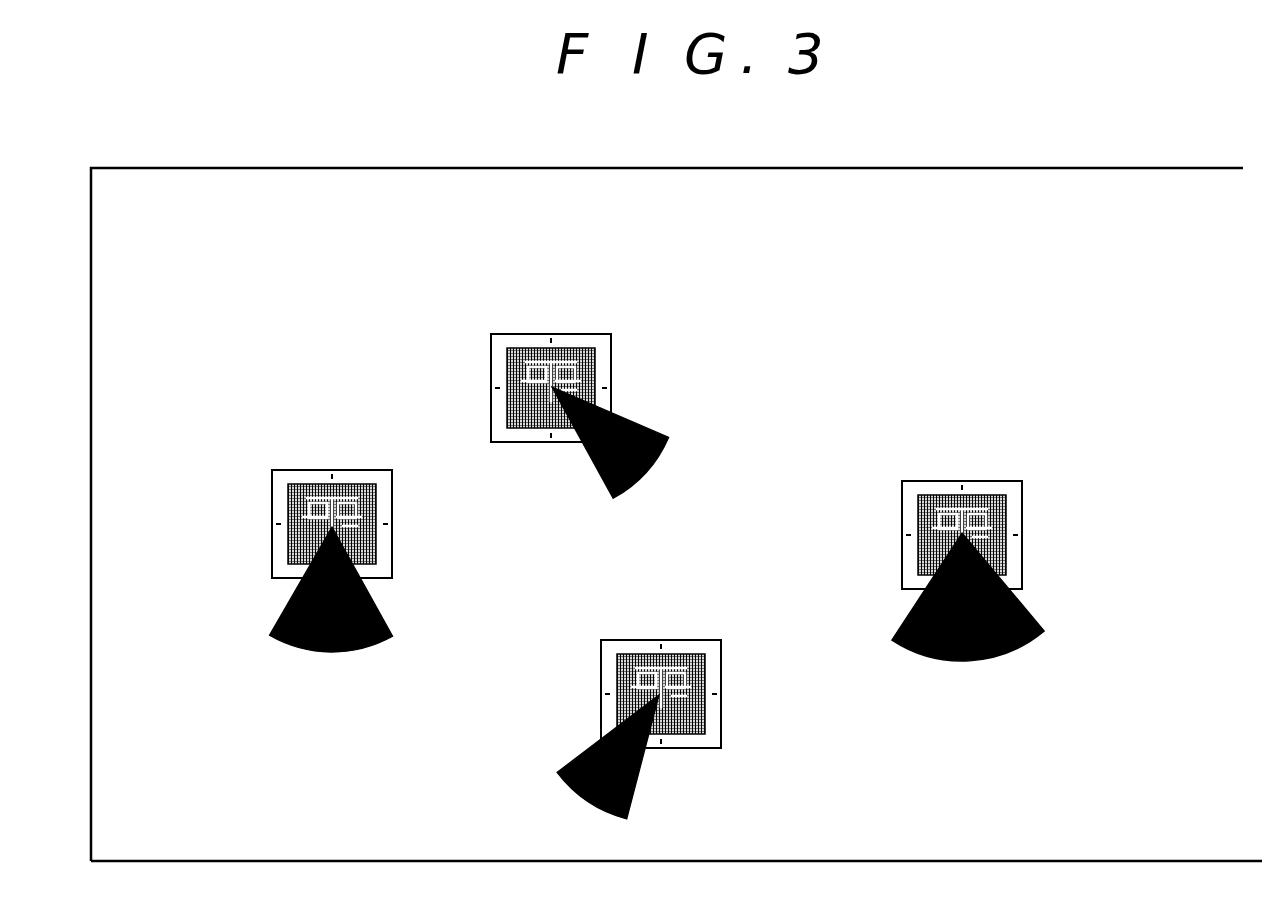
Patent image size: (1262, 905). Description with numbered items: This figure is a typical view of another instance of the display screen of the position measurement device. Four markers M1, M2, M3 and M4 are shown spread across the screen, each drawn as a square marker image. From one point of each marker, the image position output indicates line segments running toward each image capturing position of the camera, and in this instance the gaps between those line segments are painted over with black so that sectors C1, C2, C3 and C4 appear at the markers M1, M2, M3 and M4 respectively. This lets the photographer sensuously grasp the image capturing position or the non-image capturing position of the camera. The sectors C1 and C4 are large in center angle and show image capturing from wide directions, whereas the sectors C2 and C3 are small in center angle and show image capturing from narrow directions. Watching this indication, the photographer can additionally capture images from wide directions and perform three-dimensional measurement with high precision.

The marker M1 is at (350, 493).
The marker M2 is at (676, 663).
The marker M3 is at (976, 503).
The marker M4 is at (560, 357).
The sector C1 is at (328, 652).
The sector C2 is at (567, 783).
The sector C3 is at (953, 662).
The sector C4 is at (612, 500).